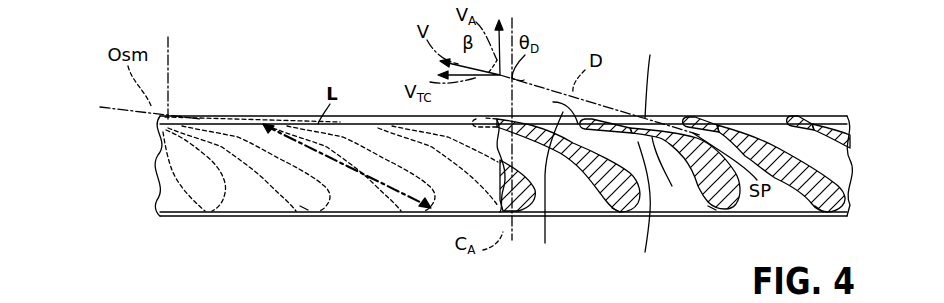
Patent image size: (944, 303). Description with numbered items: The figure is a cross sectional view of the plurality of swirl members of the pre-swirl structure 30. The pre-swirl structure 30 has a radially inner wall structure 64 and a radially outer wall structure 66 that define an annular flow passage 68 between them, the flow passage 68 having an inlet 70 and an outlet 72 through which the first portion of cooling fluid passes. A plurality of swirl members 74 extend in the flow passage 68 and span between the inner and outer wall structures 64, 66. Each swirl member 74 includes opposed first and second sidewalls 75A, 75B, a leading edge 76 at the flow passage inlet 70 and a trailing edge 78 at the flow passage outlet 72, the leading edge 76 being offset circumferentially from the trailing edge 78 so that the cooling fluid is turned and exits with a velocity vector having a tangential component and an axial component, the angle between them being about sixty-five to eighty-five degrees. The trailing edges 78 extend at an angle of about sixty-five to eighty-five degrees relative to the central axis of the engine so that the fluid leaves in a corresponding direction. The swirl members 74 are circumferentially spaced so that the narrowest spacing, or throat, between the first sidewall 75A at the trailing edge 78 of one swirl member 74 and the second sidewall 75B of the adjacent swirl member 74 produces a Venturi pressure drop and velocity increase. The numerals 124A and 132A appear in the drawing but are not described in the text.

The pre-swirl structure 30 is at (780, 105).
The radially inner wall structure 64 is at (769, 213).
The radially outer wall structure 66 is at (355, 200).
The annular flow passage 68 is at (553, 167).
The inlet 70 is at (705, 215).
The outlet 72 is at (770, 115).
The swirl member 74 is at (217, 89).
The leading edge 76 is at (310, 213).
The trailing edge 78 is at (397, 113).
The first sidewall 75A is at (584, 193).
The second sidewall 75B is at (589, 80).
The first section 124A is at (365, 298).
The second section 132A is at (489, 298).